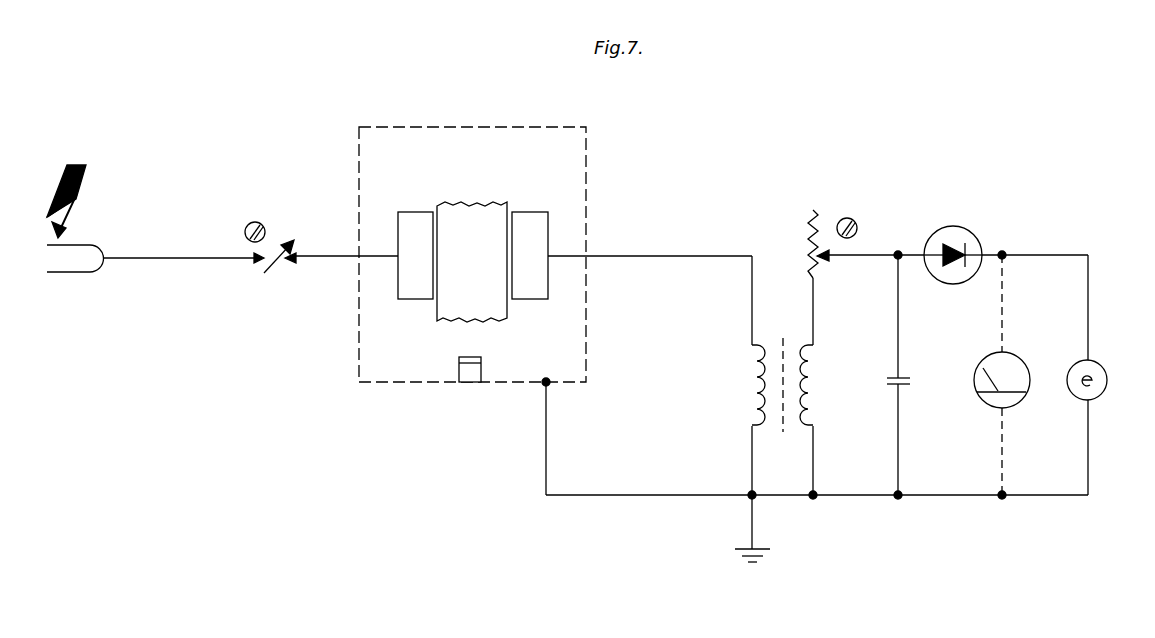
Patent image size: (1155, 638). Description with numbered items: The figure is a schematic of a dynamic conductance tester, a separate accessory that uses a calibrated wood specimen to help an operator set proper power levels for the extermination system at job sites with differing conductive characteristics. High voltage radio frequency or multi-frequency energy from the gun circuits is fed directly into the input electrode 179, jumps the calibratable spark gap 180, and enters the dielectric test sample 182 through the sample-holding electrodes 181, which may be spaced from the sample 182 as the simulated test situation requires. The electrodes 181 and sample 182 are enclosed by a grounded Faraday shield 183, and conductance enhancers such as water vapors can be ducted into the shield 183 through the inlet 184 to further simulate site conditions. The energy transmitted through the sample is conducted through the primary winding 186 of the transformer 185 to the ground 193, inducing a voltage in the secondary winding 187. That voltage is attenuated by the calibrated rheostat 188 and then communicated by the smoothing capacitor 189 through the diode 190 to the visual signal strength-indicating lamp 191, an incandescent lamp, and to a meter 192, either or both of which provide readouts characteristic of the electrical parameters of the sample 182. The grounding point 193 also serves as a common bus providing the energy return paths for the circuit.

The input electrode 179 is at (116, 228).
The calibratable spark gap 180 is at (290, 248).
The sample-holding electrodes 181 is at (412, 212).
The dielectric test sample 182 is at (466, 205).
The grounded Faraday shield 183 is at (590, 105).
The inlet 184 is at (470, 366).
The transformer 185 is at (783, 340).
The primary winding 186 is at (757, 375).
The secondary winding 187 is at (812, 390).
The calibrated rheostat 188 is at (812, 212).
The smoothing capacitor 189 is at (888, 382).
The diode 190 is at (960, 227).
The visual signal strength-indicating lamp 191 is at (1092, 360).
The meter 192 is at (1010, 352).
The ground 193 is at (760, 548).